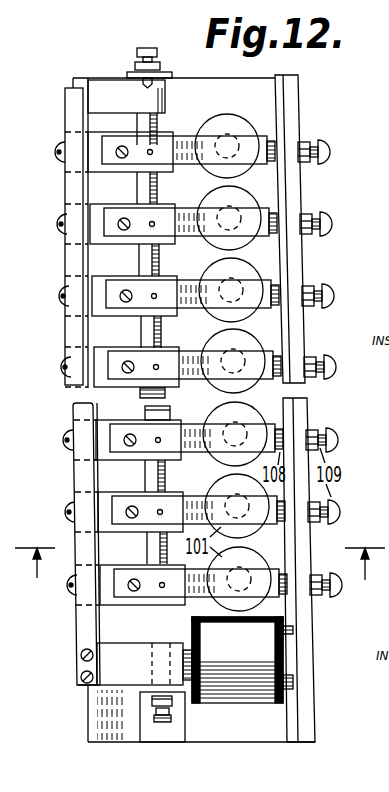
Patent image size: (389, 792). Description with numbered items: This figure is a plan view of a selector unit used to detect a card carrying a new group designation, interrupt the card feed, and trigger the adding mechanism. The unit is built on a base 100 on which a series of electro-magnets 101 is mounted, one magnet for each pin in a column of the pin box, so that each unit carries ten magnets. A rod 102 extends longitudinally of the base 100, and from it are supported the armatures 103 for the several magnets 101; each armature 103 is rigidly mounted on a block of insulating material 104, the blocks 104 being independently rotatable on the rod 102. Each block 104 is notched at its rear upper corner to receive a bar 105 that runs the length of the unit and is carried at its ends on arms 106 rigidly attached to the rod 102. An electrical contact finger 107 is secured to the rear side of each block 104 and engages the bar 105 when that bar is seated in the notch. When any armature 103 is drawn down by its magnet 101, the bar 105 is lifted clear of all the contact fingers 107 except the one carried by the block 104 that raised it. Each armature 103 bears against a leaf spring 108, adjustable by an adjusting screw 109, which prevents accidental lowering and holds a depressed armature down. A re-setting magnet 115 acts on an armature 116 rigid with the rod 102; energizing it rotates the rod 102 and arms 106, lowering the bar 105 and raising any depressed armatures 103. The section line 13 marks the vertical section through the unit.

The base 100 is at (250, 82).
The electro-magnet 101 is at (231, 134).
The rod 102 is at (175, 147).
The armature 103 is at (177, 164).
The block of insulating material 104 is at (70, 400).
The rod (bar) 105 is at (78, 335).
The arm 106 is at (107, 105).
The electrical contact finger 107 is at (73, 420).
The leaf spring 108 is at (263, 169).
The adjusting screw 109 is at (319, 211).
The re-setting magnet 115 is at (235, 688).
The armature 116 is at (188, 688).
The section line 13— 13 is at (200, 552).